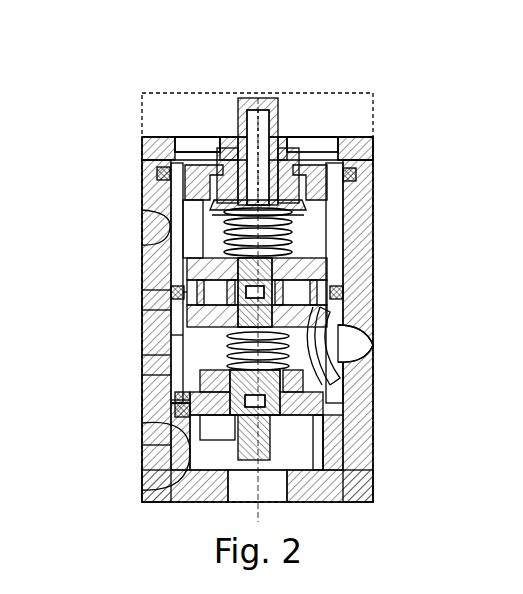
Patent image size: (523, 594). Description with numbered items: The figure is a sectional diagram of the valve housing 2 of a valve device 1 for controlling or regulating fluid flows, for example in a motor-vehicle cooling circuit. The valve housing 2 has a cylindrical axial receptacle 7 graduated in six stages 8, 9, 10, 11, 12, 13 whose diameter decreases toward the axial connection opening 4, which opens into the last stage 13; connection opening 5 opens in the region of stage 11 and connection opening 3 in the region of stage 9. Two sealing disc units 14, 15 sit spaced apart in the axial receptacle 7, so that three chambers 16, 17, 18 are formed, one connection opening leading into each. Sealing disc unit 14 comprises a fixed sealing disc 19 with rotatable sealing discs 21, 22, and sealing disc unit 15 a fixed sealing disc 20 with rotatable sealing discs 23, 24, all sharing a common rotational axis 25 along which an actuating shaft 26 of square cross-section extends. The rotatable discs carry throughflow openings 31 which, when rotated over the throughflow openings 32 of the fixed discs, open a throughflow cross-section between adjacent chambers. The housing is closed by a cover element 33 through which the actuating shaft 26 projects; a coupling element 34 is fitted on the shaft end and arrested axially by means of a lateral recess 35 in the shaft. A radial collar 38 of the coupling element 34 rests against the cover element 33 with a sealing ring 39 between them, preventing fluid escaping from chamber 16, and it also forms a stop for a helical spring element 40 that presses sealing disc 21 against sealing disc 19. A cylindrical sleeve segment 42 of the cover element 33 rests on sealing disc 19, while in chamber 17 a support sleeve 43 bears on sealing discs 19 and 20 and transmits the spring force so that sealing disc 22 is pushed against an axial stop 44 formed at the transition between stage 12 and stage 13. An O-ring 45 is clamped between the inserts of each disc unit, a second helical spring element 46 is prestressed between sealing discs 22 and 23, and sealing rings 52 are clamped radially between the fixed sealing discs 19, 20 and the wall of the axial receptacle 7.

The valve device 1 is at (44, 80).
The valve housing 2 is at (373, 488).
The connection opening 3 is at (143, 215).
The connection opening 4 is at (245, 518).
The connection opening 5 is at (373, 348).
The axial receptacle 7 is at (143, 465).
The stage 8 is at (143, 172).
The stage 9 is at (143, 258).
The stage 10 is at (143, 290).
The stage 11 is at (143, 310).
The stage 12 is at (143, 400).
The stage 13 is at (143, 445).
The sealing disc unit 14 is at (373, 268).
The sealing disc unit 15 is at (373, 380).
The chamber 16 is at (373, 195).
The chamber 17 is at (143, 335).
The chamber 18 is at (143, 490).
The fixed sealing disc 19 is at (373, 312).
The fixed sealing disc 20 is at (143, 415).
The rotatable sealing disc 21 is at (373, 238).
The rotatable sealing disc 22 is at (373, 330).
The rotatable sealing disc 23 is at (143, 375).
The rotatable sealing disc 24 is at (247, 432).
The rotational axis 25 is at (300, 140).
The actuating shaft 26 is at (312, 137).
The throughflow opening 31 is at (146, 160).
The throughflow opening 32 is at (210, 255).
The cover element 33 is at (143, 130).
The coupling element 34 is at (238, 150).
The lateral recess 35 is at (373, 138).
The radial collar 38 is at (373, 158).
The sealing ring 39 is at (205, 150).
The spring element 40 is at (373, 222).
The sleeve segment 42 is at (143, 190).
The support sleeve 43 is at (143, 355).
The central recess 44 is at (373, 428).
The O-ring 45 is at (373, 258).
The spring element 46 is at (373, 366).
The sealing ring 52 is at (373, 300).